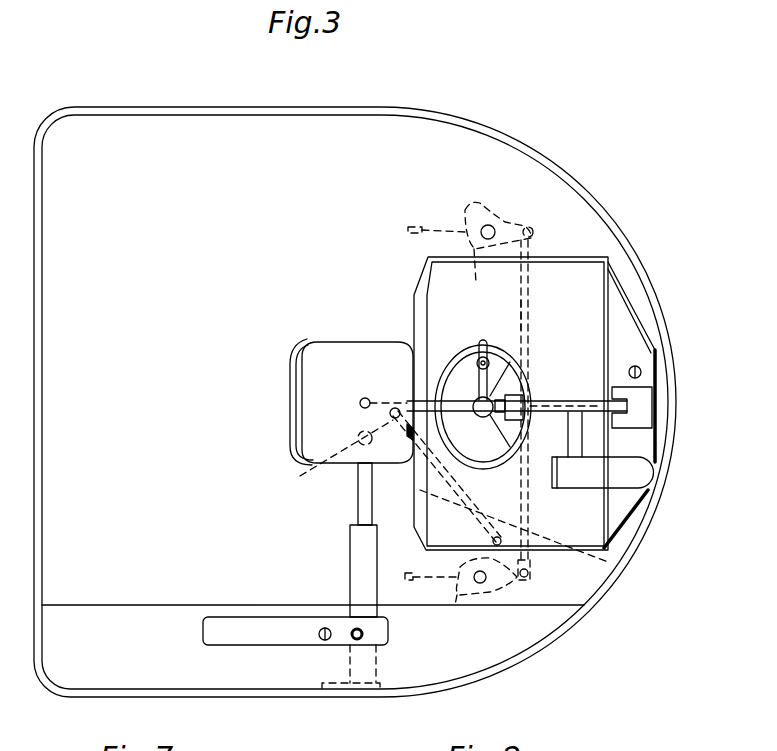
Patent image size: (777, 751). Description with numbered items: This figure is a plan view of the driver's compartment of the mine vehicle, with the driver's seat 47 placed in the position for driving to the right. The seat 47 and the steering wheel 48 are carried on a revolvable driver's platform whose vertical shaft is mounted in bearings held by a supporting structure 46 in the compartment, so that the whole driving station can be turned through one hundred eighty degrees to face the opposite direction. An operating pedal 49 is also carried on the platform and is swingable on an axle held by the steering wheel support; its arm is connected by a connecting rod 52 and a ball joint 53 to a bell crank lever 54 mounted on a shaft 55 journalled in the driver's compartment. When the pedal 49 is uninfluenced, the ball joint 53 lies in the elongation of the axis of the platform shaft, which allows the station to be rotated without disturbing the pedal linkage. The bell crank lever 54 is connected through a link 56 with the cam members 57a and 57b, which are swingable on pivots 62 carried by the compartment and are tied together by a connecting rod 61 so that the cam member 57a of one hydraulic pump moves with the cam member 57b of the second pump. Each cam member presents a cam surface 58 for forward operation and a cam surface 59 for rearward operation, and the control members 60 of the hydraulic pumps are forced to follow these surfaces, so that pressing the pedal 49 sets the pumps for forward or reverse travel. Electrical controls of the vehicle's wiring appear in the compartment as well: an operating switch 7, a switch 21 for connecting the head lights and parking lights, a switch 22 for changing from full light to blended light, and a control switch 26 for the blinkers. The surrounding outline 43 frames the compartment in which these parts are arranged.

The housing 43 is at (127, 108).
The cam surface 58 is at (465, 210).
The switch for changing from full light to blended light 22 is at (637, 366).
The operating pedal 49 is at (608, 477).
The steering wheel 48 is at (457, 362).
The control switch for the blinkers 26 is at (484, 340).
The connecting rod 61 is at (533, 315).
The pivots 62 is at (488, 225).
The cam member 57b is at (507, 223).
The cam member 57a is at (517, 597).
The cam surface 59 is at (517, 672).
The control members of the hydraulic pumps 60 is at (417, 223).
The driver's seat 47 is at (362, 348).
The shaft 55 is at (300, 477).
The bell crank lever 54 is at (358, 432).
The ball joint 53 is at (361, 398).
The connecting rod 52 is at (405, 398).
The link 56 is at (608, 562).
The supporting structure 46 is at (370, 581).
The operating switch 7 is at (322, 641).
The switch for the connection of head lights and parking lights 21 is at (353, 641).